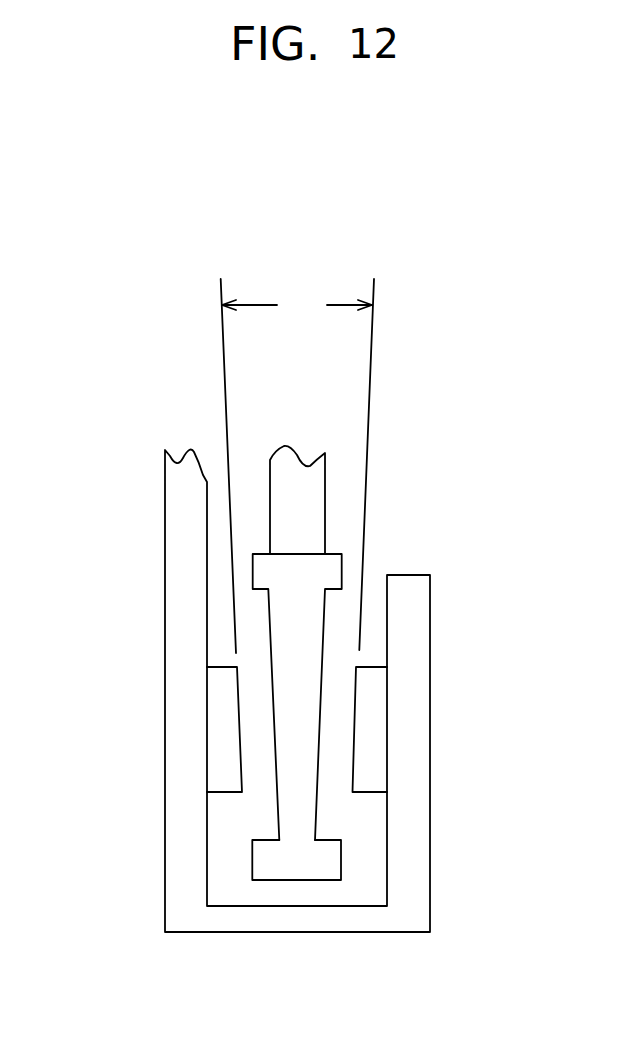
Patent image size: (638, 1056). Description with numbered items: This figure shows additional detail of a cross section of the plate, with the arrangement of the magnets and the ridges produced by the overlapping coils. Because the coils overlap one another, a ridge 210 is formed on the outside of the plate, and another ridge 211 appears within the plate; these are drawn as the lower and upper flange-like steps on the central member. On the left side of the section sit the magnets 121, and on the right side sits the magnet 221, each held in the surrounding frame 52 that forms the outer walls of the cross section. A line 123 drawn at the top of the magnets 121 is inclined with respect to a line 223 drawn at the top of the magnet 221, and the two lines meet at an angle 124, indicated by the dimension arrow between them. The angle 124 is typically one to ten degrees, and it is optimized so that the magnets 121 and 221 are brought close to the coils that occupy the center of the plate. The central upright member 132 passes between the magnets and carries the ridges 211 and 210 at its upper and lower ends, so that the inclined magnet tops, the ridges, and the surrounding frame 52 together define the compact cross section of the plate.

The outer housing bracket 52 is at (231, 921).
The magnets 121 is at (220, 763).
The magnet 221 is at (375, 733).
The line 123 is at (222, 398).
The line 223 is at (371, 388).
The angle 124 is at (297, 279).
The connecting rod 132 is at (310, 502).
The ridge 211 is at (260, 568).
The ridge 210 is at (262, 855).